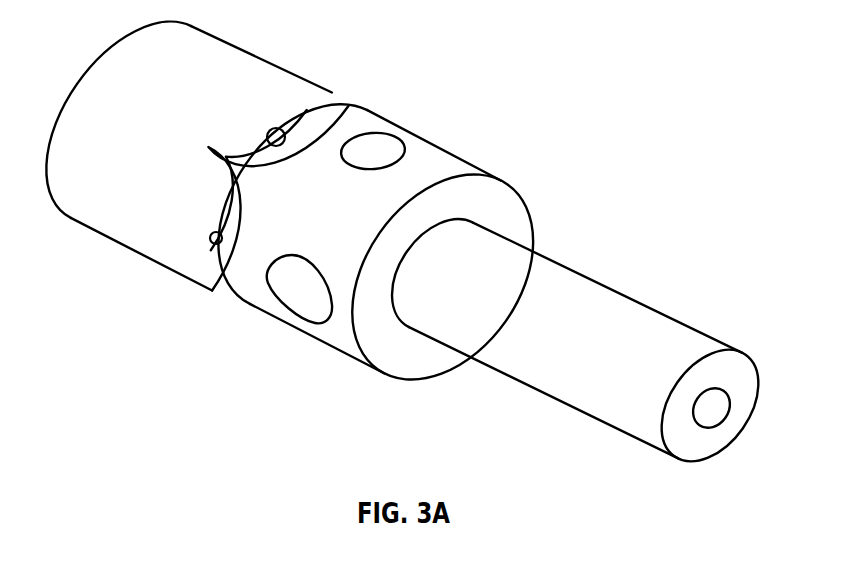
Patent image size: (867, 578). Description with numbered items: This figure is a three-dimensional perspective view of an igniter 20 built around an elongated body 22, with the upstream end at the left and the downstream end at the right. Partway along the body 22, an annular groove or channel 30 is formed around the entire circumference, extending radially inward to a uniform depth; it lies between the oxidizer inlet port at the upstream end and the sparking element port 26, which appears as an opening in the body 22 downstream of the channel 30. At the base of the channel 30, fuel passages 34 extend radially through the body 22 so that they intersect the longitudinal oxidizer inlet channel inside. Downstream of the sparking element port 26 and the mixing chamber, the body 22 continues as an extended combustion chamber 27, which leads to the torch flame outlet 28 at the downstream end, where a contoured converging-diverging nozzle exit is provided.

The igniter 20 is at (646, 74).
The elongated body 22 is at (115, 43).
The sparking element port 26 is at (383, 147).
The extended combustion chamber 27 is at (615, 290).
The torch flame outlet 28 is at (718, 405).
The annular groove or channel 30 is at (275, 107).
The fuel passages 34 is at (284, 128).